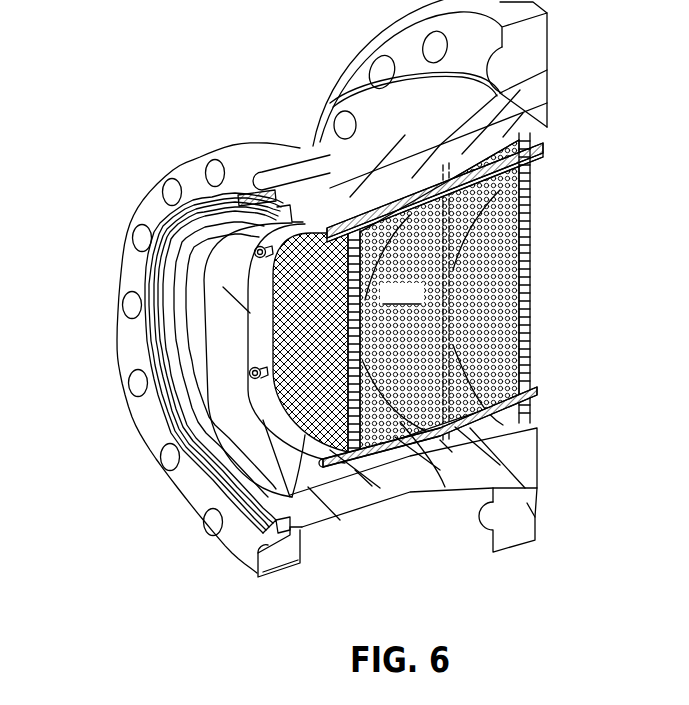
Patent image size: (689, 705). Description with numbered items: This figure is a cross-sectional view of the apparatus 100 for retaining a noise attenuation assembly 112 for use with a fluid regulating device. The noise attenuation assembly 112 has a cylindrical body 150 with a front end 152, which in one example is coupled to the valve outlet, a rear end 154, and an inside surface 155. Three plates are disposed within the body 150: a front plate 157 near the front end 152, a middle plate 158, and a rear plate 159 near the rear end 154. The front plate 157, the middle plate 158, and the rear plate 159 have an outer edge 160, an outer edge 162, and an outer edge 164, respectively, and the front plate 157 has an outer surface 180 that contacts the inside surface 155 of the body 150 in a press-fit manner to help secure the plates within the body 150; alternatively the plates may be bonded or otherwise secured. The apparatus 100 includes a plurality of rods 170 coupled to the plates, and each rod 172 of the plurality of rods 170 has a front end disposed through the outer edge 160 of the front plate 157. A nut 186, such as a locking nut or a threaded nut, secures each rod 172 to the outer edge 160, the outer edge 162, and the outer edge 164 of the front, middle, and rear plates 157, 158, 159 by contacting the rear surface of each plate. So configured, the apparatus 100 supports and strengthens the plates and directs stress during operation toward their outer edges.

The apparatus 100 is at (493, 300).
The noise attenuation assembly 112 is at (80, 231).
The body 150 is at (386, 178).
The front end 152 is at (310, 508).
The rear end 154 is at (520, 457).
The inside surface 155 is at (500, 145).
The front plate 157 is at (305, 442).
The middle plate 158 is at (396, 297).
The rear plate 159 is at (530, 230).
The outer edge 160 is at (362, 492).
The outer edge 162 is at (450, 455).
The outer edge 164 is at (527, 408).
The plurality of rods 170 is at (238, 333).
The rod 172 is at (200, 200).
The outer surface 180 is at (257, 533).
The nut 186 is at (258, 245).